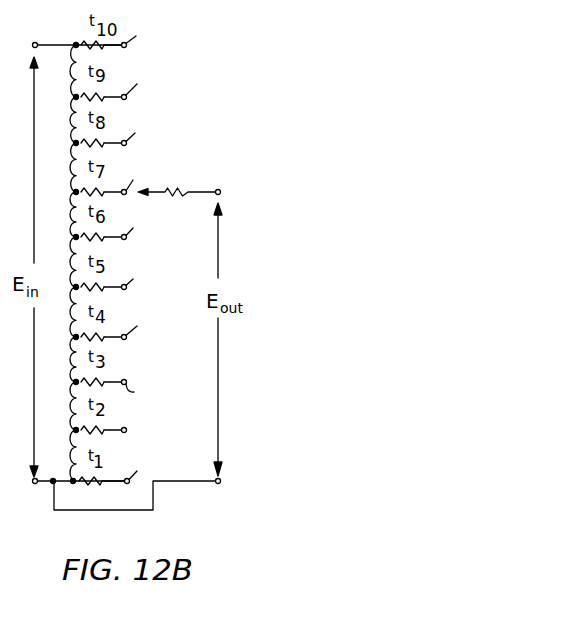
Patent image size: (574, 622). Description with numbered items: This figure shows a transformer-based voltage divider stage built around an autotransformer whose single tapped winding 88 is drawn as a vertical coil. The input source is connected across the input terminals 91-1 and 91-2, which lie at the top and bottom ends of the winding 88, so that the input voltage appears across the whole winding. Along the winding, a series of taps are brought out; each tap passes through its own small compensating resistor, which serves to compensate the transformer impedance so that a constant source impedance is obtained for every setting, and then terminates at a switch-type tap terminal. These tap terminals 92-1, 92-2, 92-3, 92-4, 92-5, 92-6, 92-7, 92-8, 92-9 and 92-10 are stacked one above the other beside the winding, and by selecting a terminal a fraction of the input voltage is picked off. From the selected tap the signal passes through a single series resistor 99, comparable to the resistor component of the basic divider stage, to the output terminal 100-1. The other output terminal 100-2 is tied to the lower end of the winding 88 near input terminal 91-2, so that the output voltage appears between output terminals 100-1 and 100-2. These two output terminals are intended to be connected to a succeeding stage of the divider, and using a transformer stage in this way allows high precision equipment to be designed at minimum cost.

The primary winding 88 is at (62, 168).
The input terminal 91-1 is at (27, 54).
The input terminal 91-2 is at (33, 483).
The tap terminal 92-1 is at (131, 468).
The tap terminal 92-2 is at (142, 430).
The tap terminal 92-3 is at (139, 381).
The tap terminal 92-4 is at (136, 325).
The tap terminal 92-5 is at (133, 275).
The tap terminal 92-6 is at (134, 225).
The tap terminal 92-7 is at (128, 177).
The tap terminal 92-8 is at (135, 130).
The tap terminal 92-9 is at (137, 95).
The tap terminal 92-10 is at (140, 32).
The resistor 99 is at (179, 184).
The output terminal 100-1 is at (230, 183).
The output terminal 100-2 is at (220, 483).